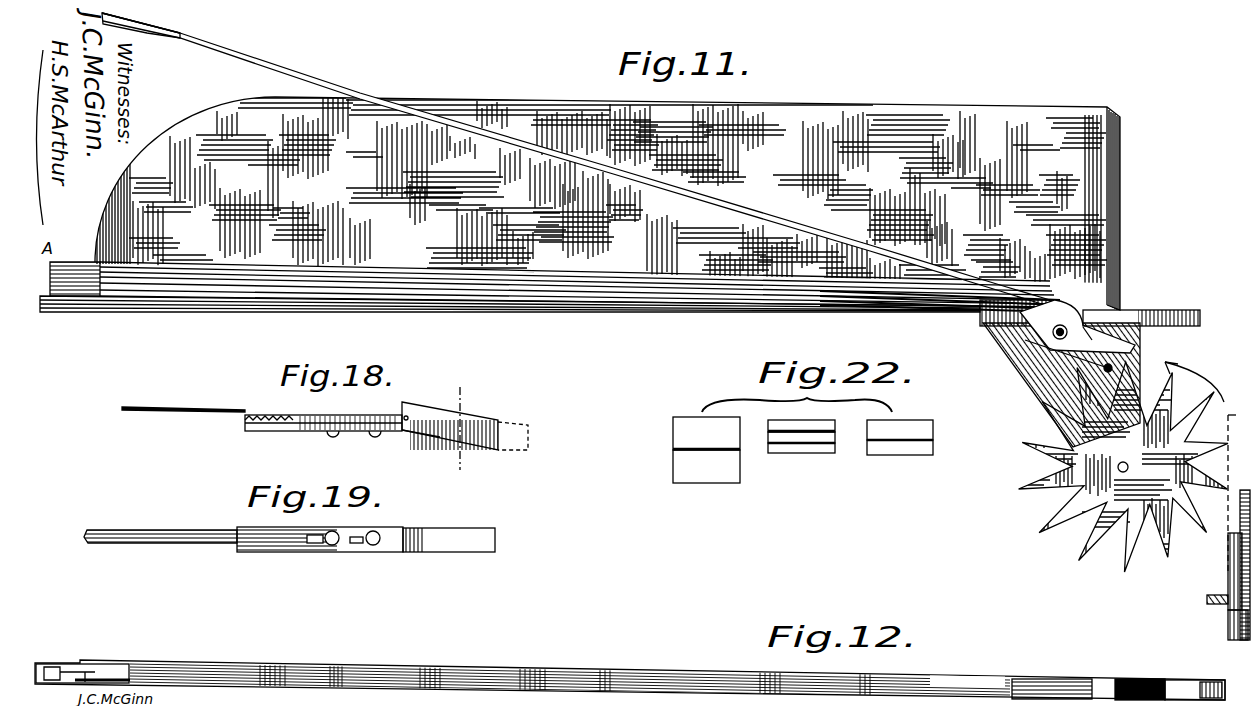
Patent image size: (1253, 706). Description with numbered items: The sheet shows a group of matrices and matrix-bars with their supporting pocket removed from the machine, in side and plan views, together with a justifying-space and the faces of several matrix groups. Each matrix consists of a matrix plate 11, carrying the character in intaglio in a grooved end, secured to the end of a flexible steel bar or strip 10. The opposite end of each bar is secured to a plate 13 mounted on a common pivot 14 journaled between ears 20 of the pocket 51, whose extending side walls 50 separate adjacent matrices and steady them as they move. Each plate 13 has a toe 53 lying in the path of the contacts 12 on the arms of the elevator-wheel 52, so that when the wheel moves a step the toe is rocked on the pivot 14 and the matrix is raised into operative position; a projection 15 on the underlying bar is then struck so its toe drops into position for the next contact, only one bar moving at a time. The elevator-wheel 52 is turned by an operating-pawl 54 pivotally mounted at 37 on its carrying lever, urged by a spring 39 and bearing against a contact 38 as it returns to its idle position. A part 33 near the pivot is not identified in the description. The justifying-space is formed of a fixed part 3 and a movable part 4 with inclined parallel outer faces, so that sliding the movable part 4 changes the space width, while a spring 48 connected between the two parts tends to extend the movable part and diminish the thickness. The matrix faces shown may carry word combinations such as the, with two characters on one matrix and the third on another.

In FIG. 11, the flexible bar or strip 10 is at (312, 92).
In FIG. 18, the flexible bar or strip 10 is at (154, 408).
In FIG. 19, the flexible bar or strip 10 is at (158, 532).
In FIG. 12, the flexible bar or strip 10 is at (630, 680).
In FIG. 11, the matrix plate 11 is at (127, 132).
In FIG. 22, the matrix plate 11 is at (726, 480).
In FIG. 12, the matrix plate 11 is at (106, 684).
In FIG. 11, the side walls 50 is at (801, 102).
In FIG. 12, the side walls 50 is at (686, 672).
In FIG. 11, the pocket 51 is at (620, 234).
In FIG. 11, the contacts 12 is at (1123, 467).
In FIG. 11, the plate 13 is at (1056, 325).
In FIG. 12, the plate 13 is at (1054, 686).
In FIG. 11, the pivot 14 is at (1074, 334).
In FIG. 11, the projection 15 is at (1087, 326).
In FIG. 11, the ears 20 is at (1033, 383).
In FIG. 11, the pin 33 is at (1104, 375).
In FIG. 11, the pawl pivot 37 is at (1228, 630).
In FIG. 11, the contact 38 is at (1209, 591).
In FIG. 11, the spring 39 is at (1232, 570).
In FIG. 11, the elevator-wheel 52 is at (1120, 453).
In FIG. 11, the toe 53 is at (1128, 348).
In FIG. 11, the operating-pawl 54 is at (1240, 505).
In FIG. 18, the fixed part 3 is at (425, 414).
In FIG. 18, the movable part 4 is at (442, 436).
In FIG. 19, the movable part 4 is at (366, 531).
In FIG. 18, the spring 48 is at (258, 412).